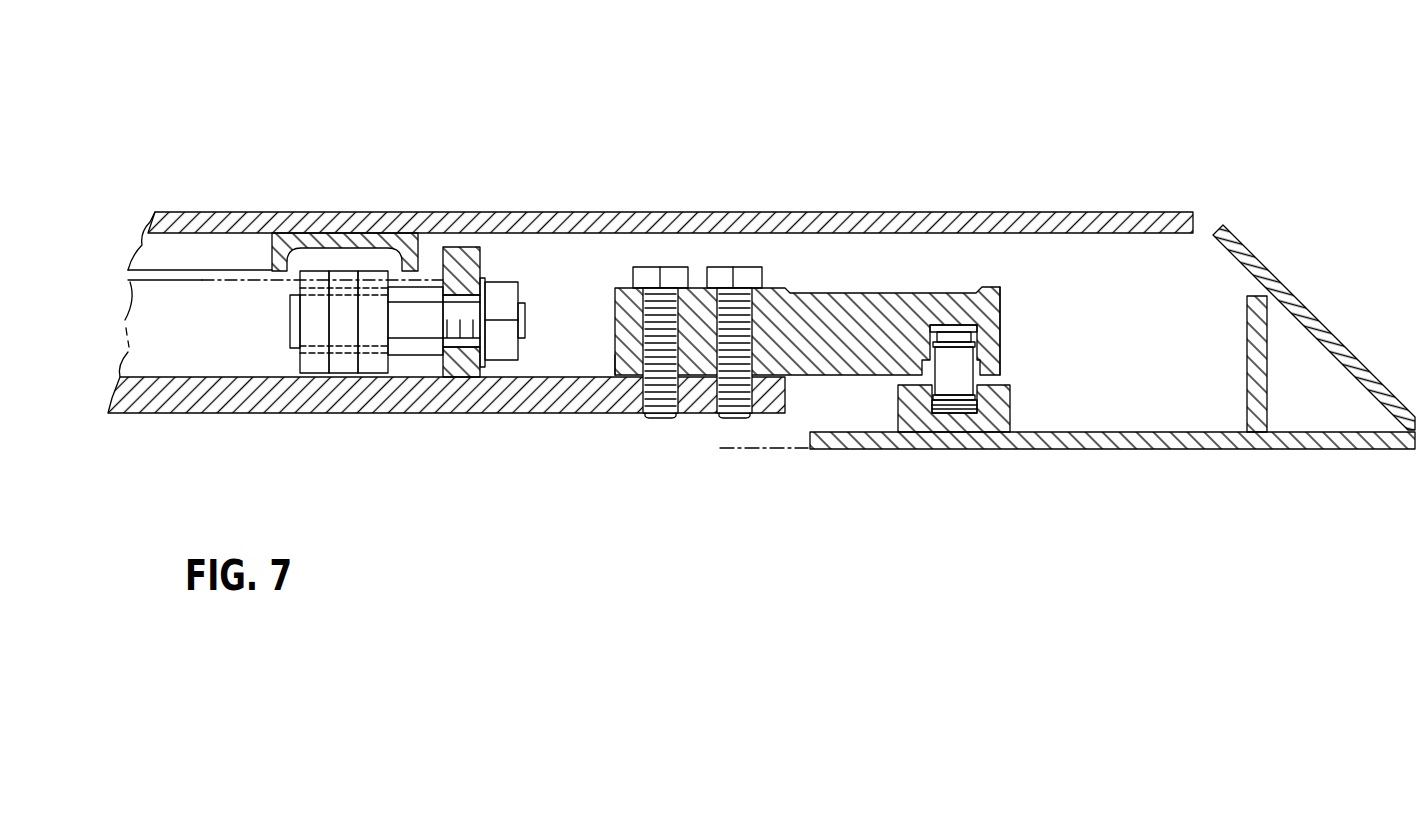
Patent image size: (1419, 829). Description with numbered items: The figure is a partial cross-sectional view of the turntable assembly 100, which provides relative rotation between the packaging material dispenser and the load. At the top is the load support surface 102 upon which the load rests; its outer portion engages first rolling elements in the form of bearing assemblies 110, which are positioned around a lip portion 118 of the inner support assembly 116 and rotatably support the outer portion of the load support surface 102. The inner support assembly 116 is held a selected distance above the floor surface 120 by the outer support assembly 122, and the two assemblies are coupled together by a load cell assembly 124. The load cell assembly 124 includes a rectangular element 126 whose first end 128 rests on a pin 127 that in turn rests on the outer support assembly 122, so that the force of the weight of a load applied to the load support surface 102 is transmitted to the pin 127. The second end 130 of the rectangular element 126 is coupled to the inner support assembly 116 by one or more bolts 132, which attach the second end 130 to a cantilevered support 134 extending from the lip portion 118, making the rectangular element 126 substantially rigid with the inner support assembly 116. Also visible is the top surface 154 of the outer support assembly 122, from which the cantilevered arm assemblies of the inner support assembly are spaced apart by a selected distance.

The turntable assembly 100 is at (220, 103).
The load support surface 102 is at (425, 212).
The bearing assemblies 110 is at (305, 328).
The inner support assembly 116 is at (253, 418).
The lip portion 118 is at (462, 252).
The floor surface 120 is at (786, 451).
The outer support assembly 122 is at (1180, 456).
The load cell assembly 124 is at (851, 276).
The rectangular element 126 is at (836, 384).
The pin 127 is at (953, 371).
The first end 128 is at (1000, 328).
The second end 130 is at (615, 365).
The bolts 132 is at (725, 266).
The cantilevered support 134 is at (693, 418).
The top surface 154 is at (1093, 430).